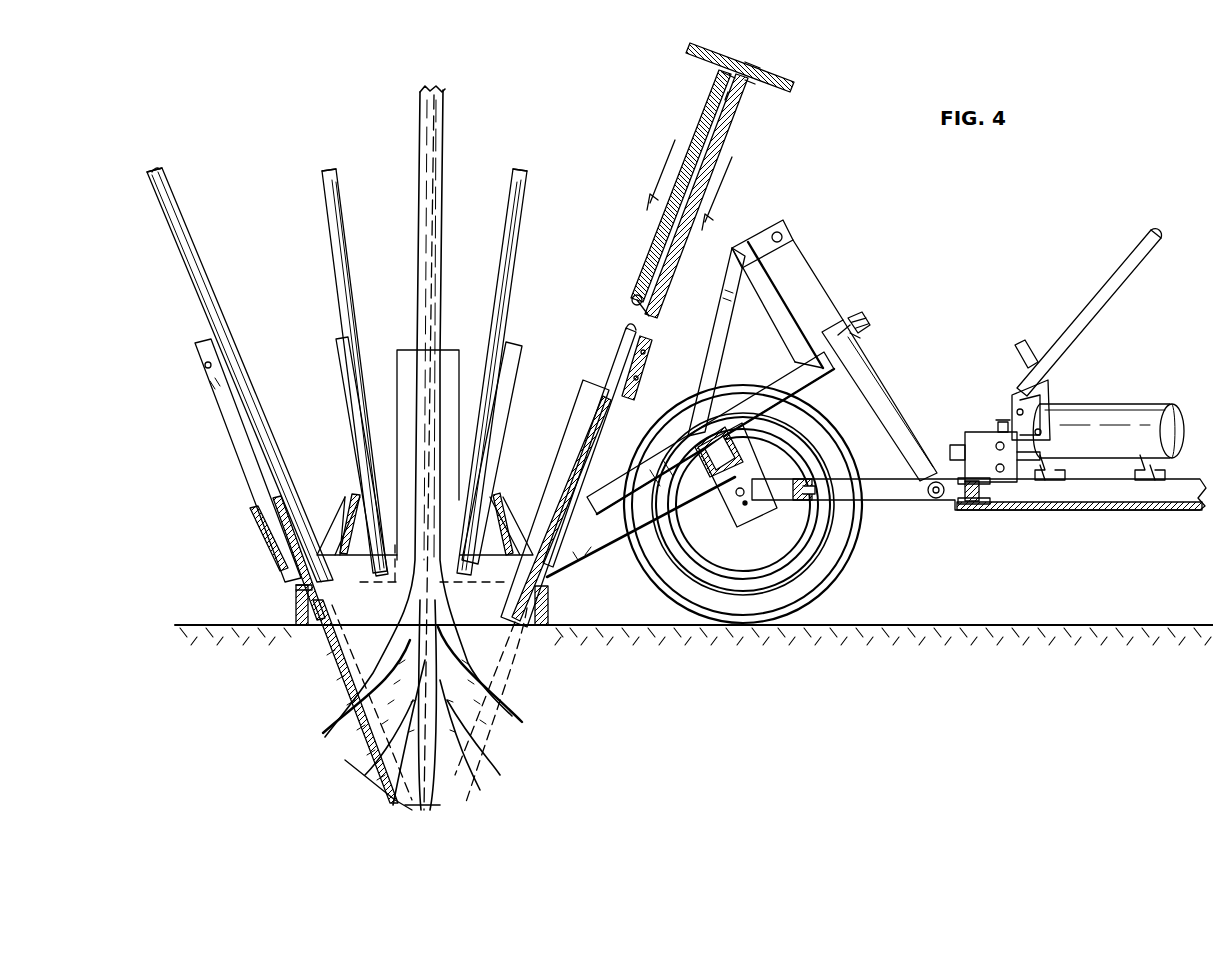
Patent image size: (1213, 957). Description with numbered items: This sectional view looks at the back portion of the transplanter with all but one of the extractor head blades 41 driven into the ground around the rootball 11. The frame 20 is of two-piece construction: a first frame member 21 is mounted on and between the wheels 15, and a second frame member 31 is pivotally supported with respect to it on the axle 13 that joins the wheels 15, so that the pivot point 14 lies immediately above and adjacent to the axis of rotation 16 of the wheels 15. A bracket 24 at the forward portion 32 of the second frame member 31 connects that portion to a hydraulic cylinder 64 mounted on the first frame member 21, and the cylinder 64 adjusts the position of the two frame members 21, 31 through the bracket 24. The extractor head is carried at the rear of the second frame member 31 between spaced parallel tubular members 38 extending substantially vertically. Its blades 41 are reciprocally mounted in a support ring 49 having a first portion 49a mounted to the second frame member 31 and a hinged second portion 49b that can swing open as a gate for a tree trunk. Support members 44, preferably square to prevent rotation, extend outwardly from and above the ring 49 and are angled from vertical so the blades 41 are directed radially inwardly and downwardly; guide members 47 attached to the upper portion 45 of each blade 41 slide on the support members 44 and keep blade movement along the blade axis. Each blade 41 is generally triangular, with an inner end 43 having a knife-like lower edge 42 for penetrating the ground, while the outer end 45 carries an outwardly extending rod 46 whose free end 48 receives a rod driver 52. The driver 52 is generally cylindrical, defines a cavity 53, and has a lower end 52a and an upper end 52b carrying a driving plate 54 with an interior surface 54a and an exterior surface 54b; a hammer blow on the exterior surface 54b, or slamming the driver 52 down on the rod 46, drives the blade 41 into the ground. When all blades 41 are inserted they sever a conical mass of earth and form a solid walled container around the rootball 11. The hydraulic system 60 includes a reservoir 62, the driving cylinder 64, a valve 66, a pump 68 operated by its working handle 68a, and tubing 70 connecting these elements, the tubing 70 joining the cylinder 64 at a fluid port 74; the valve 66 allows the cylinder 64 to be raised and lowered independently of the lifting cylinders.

The rootball 11 is at (468, 652).
The axle 13 is at (745, 422).
The pivot point 14 is at (735, 497).
The wheels 15 is at (837, 550).
The axis of rotation 16 is at (752, 505).
The frame 20 is at (1185, 518).
The first frame member 21 is at (1098, 515).
The bracket 24 is at (735, 266).
The second frame member 31 is at (610, 540).
The forward portion of second frame member 32 is at (688, 458).
The tubular members 38 is at (450, 352).
The blades 41 is at (357, 633).
The lower edge 42 is at (398, 806).
The inner end 43 is at (385, 792).
The support members 44 is at (213, 410).
The outer end of blade 45 is at (325, 503).
The rod 46 is at (168, 227).
The guide members 47 is at (250, 522).
The free end of rod 48 is at (152, 170).
The support ring 49 is at (296, 603).
The first portion of support ring 49a is at (548, 606).
The second portion of support ring 49b is at (298, 588).
The rod driver 52 is at (694, 122).
The lower end of rod driver 52a is at (628, 304).
The upper end of rod driver 52b is at (755, 84).
The cavity 53 is at (726, 100).
The driving plate 54 is at (795, 82).
The interior surface 54a is at (722, 74).
The exterior surface 54b is at (752, 66).
The hydraulic system 60 is at (1126, 398).
The reservoir 62 is at (1140, 410).
The hydraulic cylinder 64 is at (885, 395).
The valve 66 is at (1000, 425).
The pump 68 is at (1060, 380).
The working handle 68a is at (1093, 290).
The tubing 70 is at (862, 318).
The fluid port 74 is at (860, 338).